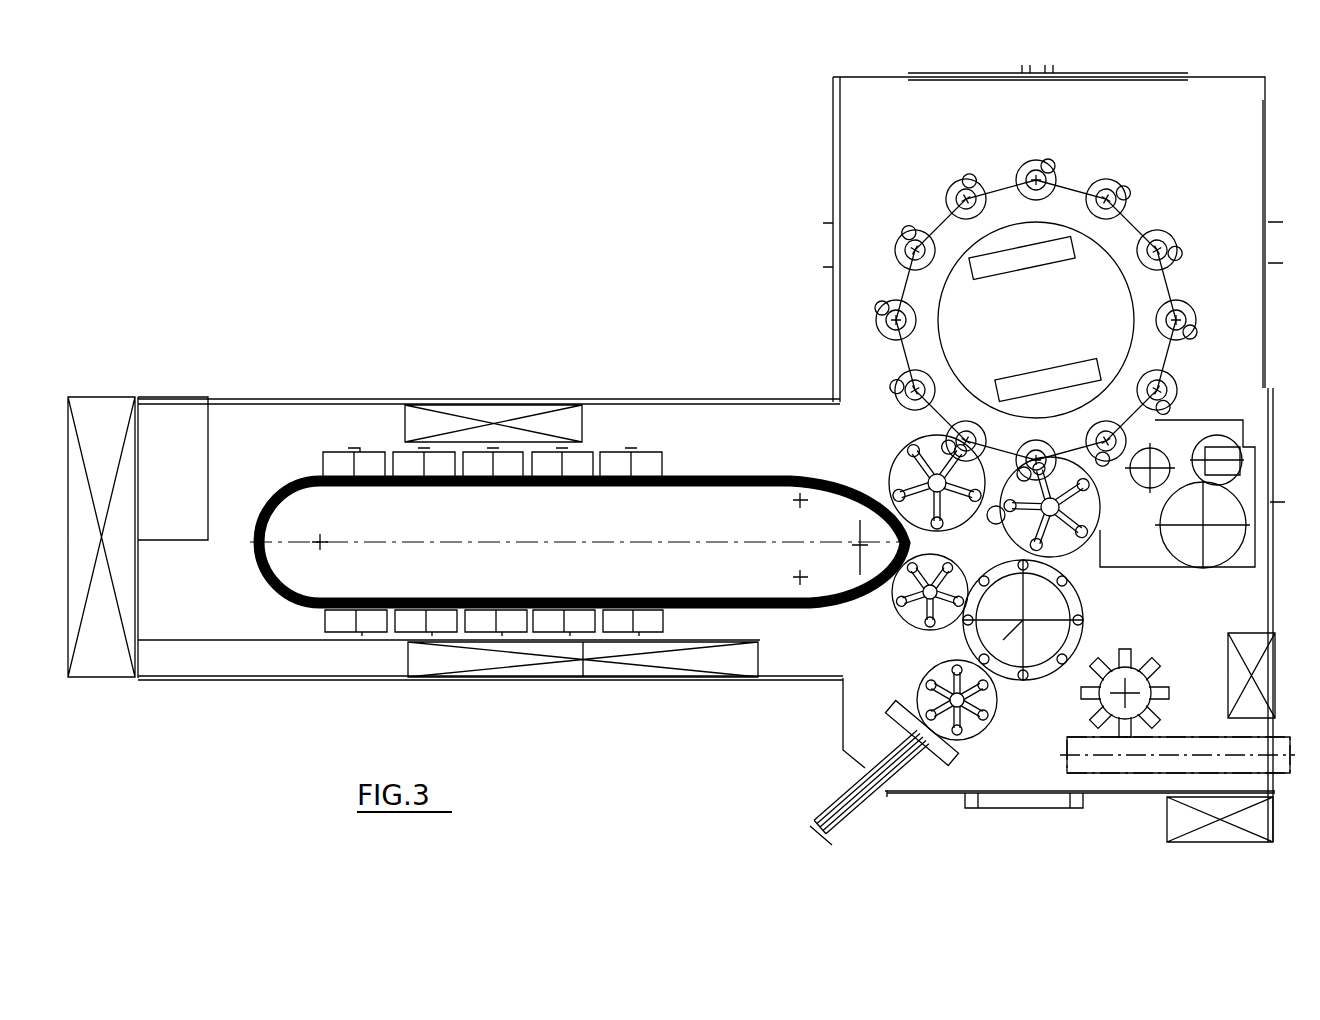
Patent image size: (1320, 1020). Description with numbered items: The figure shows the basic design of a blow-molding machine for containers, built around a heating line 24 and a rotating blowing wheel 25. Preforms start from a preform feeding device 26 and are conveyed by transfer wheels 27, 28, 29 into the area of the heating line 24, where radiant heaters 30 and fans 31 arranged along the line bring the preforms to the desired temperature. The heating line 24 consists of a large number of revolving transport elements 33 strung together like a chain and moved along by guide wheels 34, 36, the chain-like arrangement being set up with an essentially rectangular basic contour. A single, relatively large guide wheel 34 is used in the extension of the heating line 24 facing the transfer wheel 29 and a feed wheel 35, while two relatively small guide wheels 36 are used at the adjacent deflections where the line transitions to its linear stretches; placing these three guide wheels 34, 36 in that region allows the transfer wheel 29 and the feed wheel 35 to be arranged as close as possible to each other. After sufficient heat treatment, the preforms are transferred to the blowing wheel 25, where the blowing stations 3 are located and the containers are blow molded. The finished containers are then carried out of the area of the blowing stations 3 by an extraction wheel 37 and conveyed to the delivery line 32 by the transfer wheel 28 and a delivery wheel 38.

The blowing stations 3 is at (882, 297).
The heating line 24 is at (620, 432).
The blowing wheel 25 is at (962, 232).
The preform feeding device 26 is at (878, 800).
The transfer wheel 27 is at (973, 740).
The transfer wheel 28 is at (1030, 688).
The transfer wheel 29 is at (905, 622).
The radiant heaters 30 is at (370, 452).
The fans 31 is at (486, 410).
The delivery line 32 is at (1278, 762).
The transport elements 33 is at (300, 598).
The guide wheel 34 is at (323, 547).
The feed wheel 35 is at (897, 420).
The guide wheels 36 is at (768, 470).
The extraction wheel 37 is at (1100, 527).
The delivery wheel 38 is at (1127, 705).